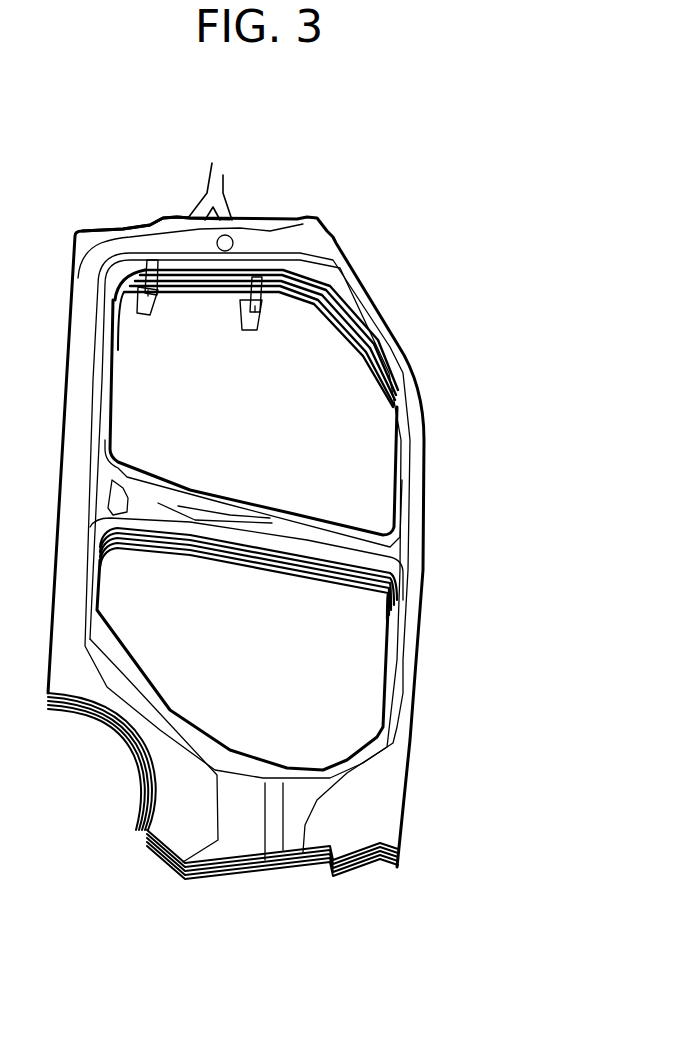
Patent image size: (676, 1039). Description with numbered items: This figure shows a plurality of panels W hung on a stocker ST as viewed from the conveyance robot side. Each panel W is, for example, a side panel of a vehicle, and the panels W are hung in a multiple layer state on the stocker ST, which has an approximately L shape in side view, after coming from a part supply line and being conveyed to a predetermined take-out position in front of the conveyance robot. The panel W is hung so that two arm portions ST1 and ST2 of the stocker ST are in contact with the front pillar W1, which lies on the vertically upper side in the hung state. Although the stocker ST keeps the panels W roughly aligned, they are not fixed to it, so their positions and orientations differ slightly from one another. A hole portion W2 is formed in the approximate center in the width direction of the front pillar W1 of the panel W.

The panel W is at (236, 548).
The front pillar W1 is at (163, 240).
The hole portion W2 is at (228, 236).
The stocker ST is at (224, 176).
The arm portion ST1 is at (258, 306).
The arm portion ST2 is at (158, 297).